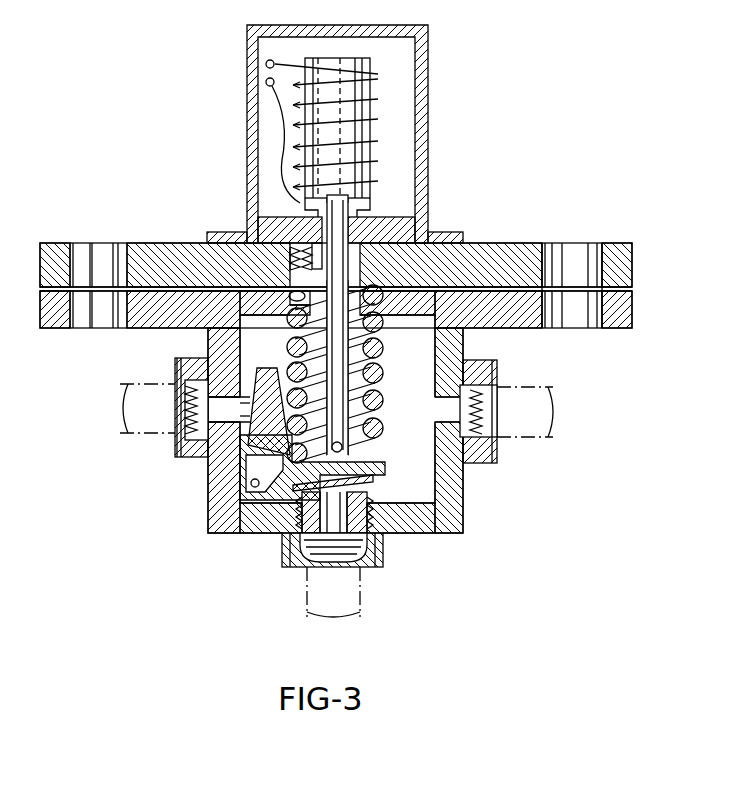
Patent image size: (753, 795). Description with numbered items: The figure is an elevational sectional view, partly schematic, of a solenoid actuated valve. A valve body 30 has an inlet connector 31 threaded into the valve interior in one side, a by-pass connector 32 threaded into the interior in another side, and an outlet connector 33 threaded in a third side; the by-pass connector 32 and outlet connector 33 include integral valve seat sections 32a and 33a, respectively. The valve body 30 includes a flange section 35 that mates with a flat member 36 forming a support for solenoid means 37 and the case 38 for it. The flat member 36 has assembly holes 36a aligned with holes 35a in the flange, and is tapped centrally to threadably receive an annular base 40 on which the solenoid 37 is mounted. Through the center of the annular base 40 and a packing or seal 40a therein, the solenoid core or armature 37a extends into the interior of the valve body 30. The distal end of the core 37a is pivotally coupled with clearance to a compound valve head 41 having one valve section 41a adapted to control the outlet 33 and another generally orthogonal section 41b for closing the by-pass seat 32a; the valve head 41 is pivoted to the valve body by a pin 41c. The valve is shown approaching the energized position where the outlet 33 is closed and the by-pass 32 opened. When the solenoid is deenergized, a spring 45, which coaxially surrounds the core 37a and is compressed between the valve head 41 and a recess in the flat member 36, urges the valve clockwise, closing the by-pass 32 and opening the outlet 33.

The valve body 30 is at (455, 503).
The inlet connector 31 is at (497, 364).
The by-pass connector 32 is at (372, 567).
The valve seat section 32a is at (367, 497).
The outlet connector 33 is at (175, 443).
The valve seat section 33a is at (252, 372).
The flange section 35 is at (612, 325).
The holes 35a is at (590, 327).
The flat member 36 is at (498, 247).
The assembly holes 36a is at (600, 263).
The solenoid means 37 is at (372, 132).
The solenoid core 37a is at (335, 238).
The case 38 is at (430, 102).
The annular base 40 is at (420, 240).
The packing or seal 40a is at (315, 248).
The compound valve head 41 is at (246, 525).
The valve section 41a is at (272, 435).
The valve section 41b is at (300, 483).
The pin 41c is at (253, 487).
The spring 45 is at (375, 365).